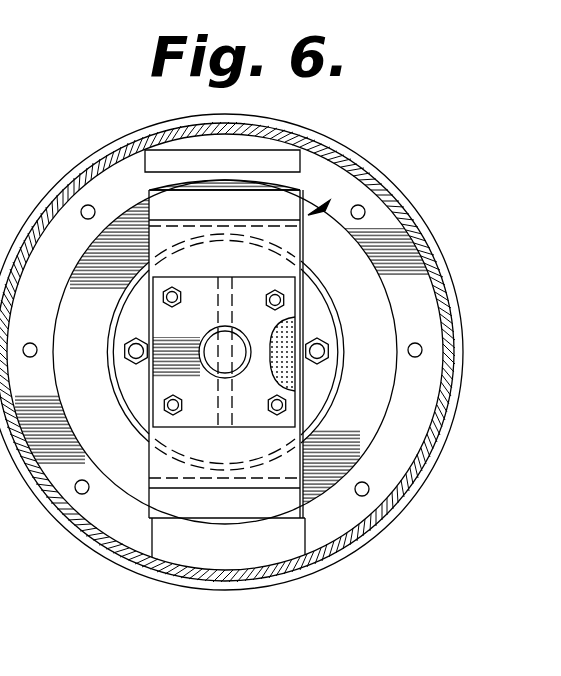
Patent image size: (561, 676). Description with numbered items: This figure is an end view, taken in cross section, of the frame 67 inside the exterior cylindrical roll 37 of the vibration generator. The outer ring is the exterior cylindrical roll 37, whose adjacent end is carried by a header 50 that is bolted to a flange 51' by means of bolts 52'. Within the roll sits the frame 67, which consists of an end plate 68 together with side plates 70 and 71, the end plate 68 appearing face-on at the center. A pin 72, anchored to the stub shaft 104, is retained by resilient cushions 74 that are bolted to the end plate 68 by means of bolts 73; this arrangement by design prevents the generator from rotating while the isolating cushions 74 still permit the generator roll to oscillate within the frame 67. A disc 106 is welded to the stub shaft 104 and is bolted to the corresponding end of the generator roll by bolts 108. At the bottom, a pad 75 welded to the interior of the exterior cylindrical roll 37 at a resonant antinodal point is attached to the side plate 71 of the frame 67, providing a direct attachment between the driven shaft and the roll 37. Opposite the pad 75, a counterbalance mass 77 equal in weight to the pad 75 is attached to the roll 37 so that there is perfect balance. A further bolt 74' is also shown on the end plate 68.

The exterior cylindrical roll 37 is at (355, 540).
The header 50 is at (357, 440).
The flange 51' is at (49, 514).
The bolts 52' is at (56, 174).
The frame 67 is at (325, 207).
The end plate 68 is at (300, 252).
The side plate 70 is at (258, 203).
The side plate 71 is at (192, 507).
The pin 72 is at (215, 313).
The bolts 73 is at (170, 408).
The resilient cushions 74 is at (320, 332).
The bolt 74' is at (114, 345).
The pad 75 is at (253, 550).
The counterbalance mass 77 is at (179, 157).
The stub shaft 104 is at (214, 350).
The disc 106 is at (317, 391).
The bolts 108 is at (317, 352).